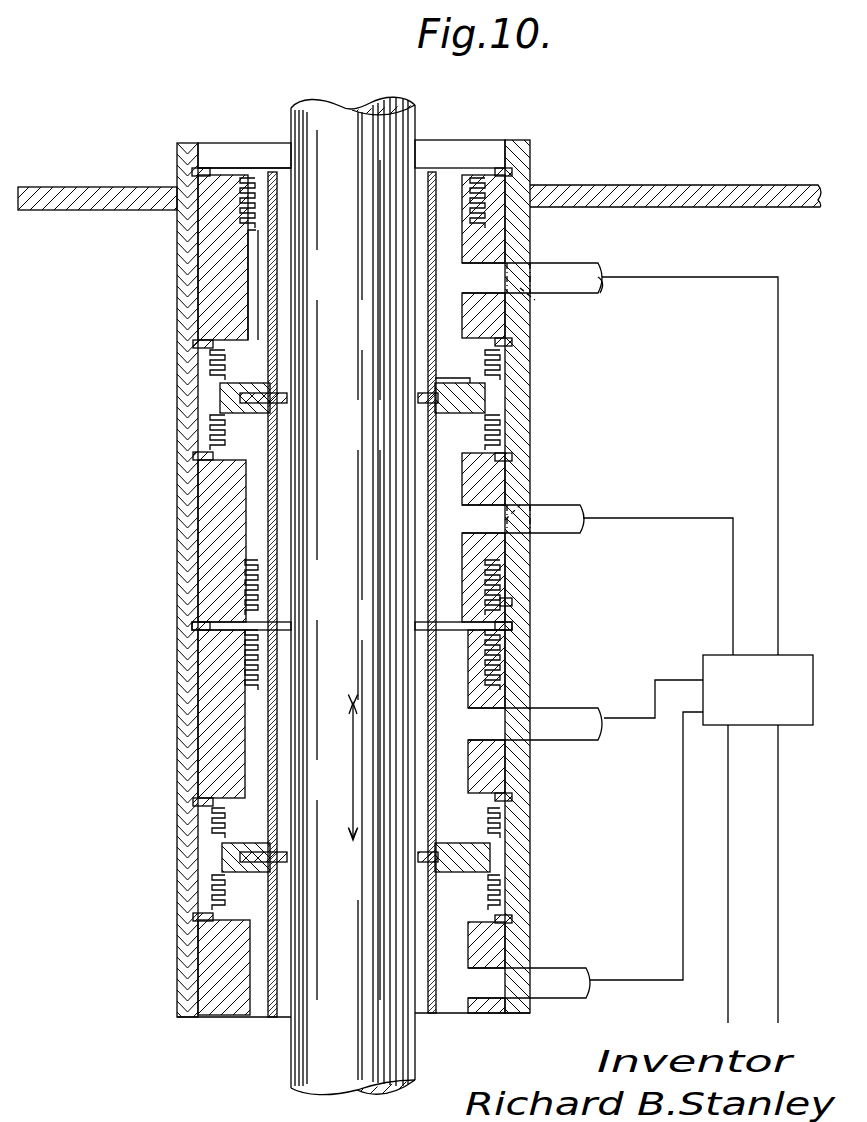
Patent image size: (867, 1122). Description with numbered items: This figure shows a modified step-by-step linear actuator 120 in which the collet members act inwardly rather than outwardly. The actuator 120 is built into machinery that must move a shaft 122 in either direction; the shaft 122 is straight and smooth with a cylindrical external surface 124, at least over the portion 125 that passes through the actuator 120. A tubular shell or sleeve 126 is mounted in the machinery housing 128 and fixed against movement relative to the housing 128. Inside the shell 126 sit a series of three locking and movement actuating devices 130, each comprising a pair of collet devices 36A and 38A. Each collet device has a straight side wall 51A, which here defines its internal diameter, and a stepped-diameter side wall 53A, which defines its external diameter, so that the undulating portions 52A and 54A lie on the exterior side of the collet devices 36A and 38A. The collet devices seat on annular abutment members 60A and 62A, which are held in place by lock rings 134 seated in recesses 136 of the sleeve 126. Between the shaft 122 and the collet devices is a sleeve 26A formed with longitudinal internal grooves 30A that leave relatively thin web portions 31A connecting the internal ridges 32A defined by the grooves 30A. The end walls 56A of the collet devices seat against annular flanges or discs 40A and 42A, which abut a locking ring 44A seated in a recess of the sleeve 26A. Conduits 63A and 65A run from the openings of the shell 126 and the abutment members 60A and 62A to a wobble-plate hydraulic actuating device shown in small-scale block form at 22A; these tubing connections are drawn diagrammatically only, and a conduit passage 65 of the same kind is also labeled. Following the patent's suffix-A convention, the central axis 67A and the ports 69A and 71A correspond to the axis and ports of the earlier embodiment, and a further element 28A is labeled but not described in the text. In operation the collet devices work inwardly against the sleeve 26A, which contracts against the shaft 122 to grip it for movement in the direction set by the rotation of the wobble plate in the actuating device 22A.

The step-by-step linear actuator 120 is at (622, 183).
The shaft 122 is at (400, 142).
The cylindrical external surface 124 is at (400, 150).
The shaft portion 125 is at (288, 131).
The tubular shell or sleeve 126 is at (535, 358).
The machinery housing 128 is at (702, 182).
The locking and movement actuating device 130 is at (188, 438).
The lock ring 134 is at (503, 172).
The recess 136 is at (508, 343).
The hydraulic actuating device 22A is at (757, 731).
The sleeve 26A is at (265, 313).
The annular chamber 28A is at (285, 292).
The internal groove 30A is at (278, 257).
The web portion 31A is at (252, 228).
The internal ridge 32A is at (285, 272).
The collet device 36A is at (508, 440).
The collet device 38A is at (500, 372).
The annular flange or disc 40A is at (425, 397).
The annular flange or disc 42A is at (445, 383).
The locking ring 44A is at (425, 405).
The straight side wall 51A is at (428, 515).
The undulating portion 52A is at (503, 418).
The stepped diameter side wall 53A is at (530, 468).
The undulating portion 54A is at (480, 603).
The end wall 56A is at (262, 383).
The annular abutment member 60A is at (500, 580).
The annular abutment member 62A is at (488, 216).
The conduit 63A is at (567, 512).
The conduit passage 65 is at (572, 740).
The conduit 65A is at (578, 283).
The passage 67A is at (482, 283).
The passage 69A is at (528, 490).
The passage 71A is at (535, 300).